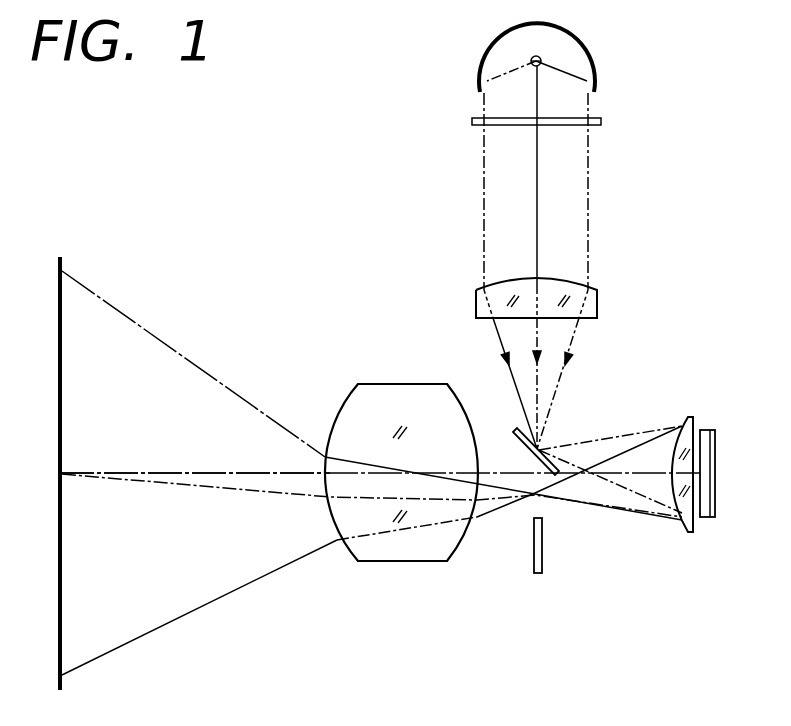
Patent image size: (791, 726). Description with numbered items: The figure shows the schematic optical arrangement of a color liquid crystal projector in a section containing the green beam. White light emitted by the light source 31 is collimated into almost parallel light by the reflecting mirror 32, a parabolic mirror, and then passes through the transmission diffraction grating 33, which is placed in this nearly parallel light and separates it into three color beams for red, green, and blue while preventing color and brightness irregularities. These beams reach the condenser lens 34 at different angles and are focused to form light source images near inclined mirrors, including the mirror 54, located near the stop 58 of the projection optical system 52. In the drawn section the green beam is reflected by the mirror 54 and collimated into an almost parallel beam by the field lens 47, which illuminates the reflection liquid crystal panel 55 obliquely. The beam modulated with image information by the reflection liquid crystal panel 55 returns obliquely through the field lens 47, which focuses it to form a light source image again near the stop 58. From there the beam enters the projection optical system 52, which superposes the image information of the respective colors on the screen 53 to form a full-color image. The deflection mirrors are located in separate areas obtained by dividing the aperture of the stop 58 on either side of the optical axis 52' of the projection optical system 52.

The light source 31 is at (539, 56).
The reflecting mirror 32 is at (583, 69).
The transmission diffraction grating 33 is at (601, 121).
The condenser lens 34 is at (597, 305).
The field lens 47 is at (705, 428).
The projection optical system 52 is at (401, 436).
The optical axis 52' is at (195, 436).
The screen 53 is at (63, 680).
The mirror 54 is at (515, 430).
The reflection liquid crystal panel 55 is at (690, 532).
The stop 58 is at (542, 552).